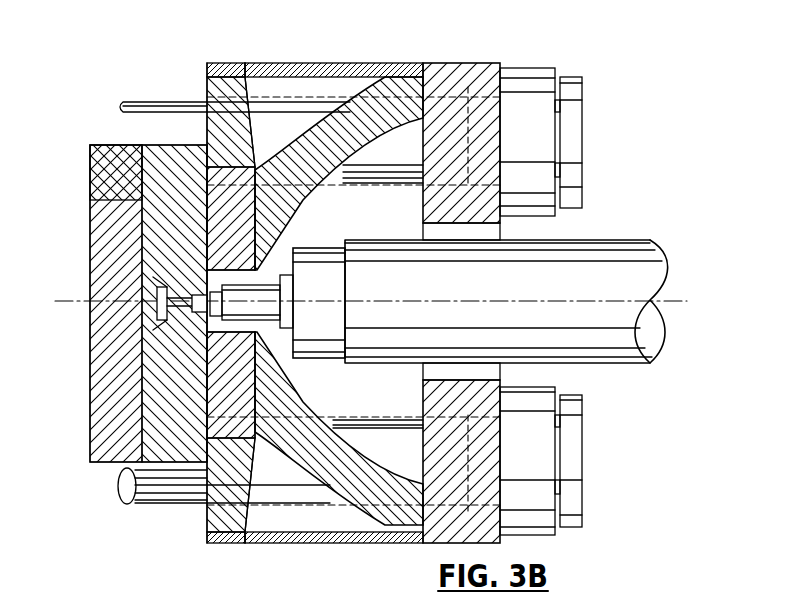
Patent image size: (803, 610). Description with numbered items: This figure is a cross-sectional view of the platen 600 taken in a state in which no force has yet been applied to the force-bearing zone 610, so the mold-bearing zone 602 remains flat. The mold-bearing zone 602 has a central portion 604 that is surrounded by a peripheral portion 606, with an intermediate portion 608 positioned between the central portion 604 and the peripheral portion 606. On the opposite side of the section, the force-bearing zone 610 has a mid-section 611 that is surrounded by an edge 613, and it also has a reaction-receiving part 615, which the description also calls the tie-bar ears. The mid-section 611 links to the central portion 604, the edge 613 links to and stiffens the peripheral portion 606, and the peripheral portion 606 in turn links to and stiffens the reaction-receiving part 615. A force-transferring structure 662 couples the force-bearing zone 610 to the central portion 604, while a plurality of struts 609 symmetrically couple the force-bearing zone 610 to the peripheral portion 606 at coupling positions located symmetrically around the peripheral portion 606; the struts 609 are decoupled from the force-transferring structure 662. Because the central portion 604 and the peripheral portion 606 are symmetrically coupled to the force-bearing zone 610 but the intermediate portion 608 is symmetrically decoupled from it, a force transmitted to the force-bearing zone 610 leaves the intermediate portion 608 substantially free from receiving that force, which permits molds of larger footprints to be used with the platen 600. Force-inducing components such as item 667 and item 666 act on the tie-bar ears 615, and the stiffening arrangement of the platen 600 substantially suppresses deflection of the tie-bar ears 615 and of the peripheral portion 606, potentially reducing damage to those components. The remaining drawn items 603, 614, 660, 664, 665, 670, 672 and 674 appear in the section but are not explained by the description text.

The platen 600 is at (380, 301).
The mold-bearing zone 602 is at (237, 62).
The orifice 603 is at (150, 300).
The central portion 604 is at (150, 118).
The peripheral portion 606 is at (222, 63).
The intermediate portion 608 is at (220, 125).
The struts 609 is at (262, 63).
The force-bearing zone 610 is at (470, 63).
The mid-section 611 is at (420, 218).
The edge 613 is at (442, 72).
The conduit line 614 is at (165, 477).
The reaction-receiving part 615 is at (500, 143).
The manifold block 660 is at (90, 335).
The force-transferring structure 662 is at (340, 133).
The shaft 664 is at (635, 282).
The shaft boss 665 is at (490, 233).
The force-inducing component 666 is at (140, 147).
The force-inducing component 667 is at (522, 85).
The outer block 670 is at (150, 215).
The seal 672 is at (115, 245).
The pin 674 is at (150, 302).